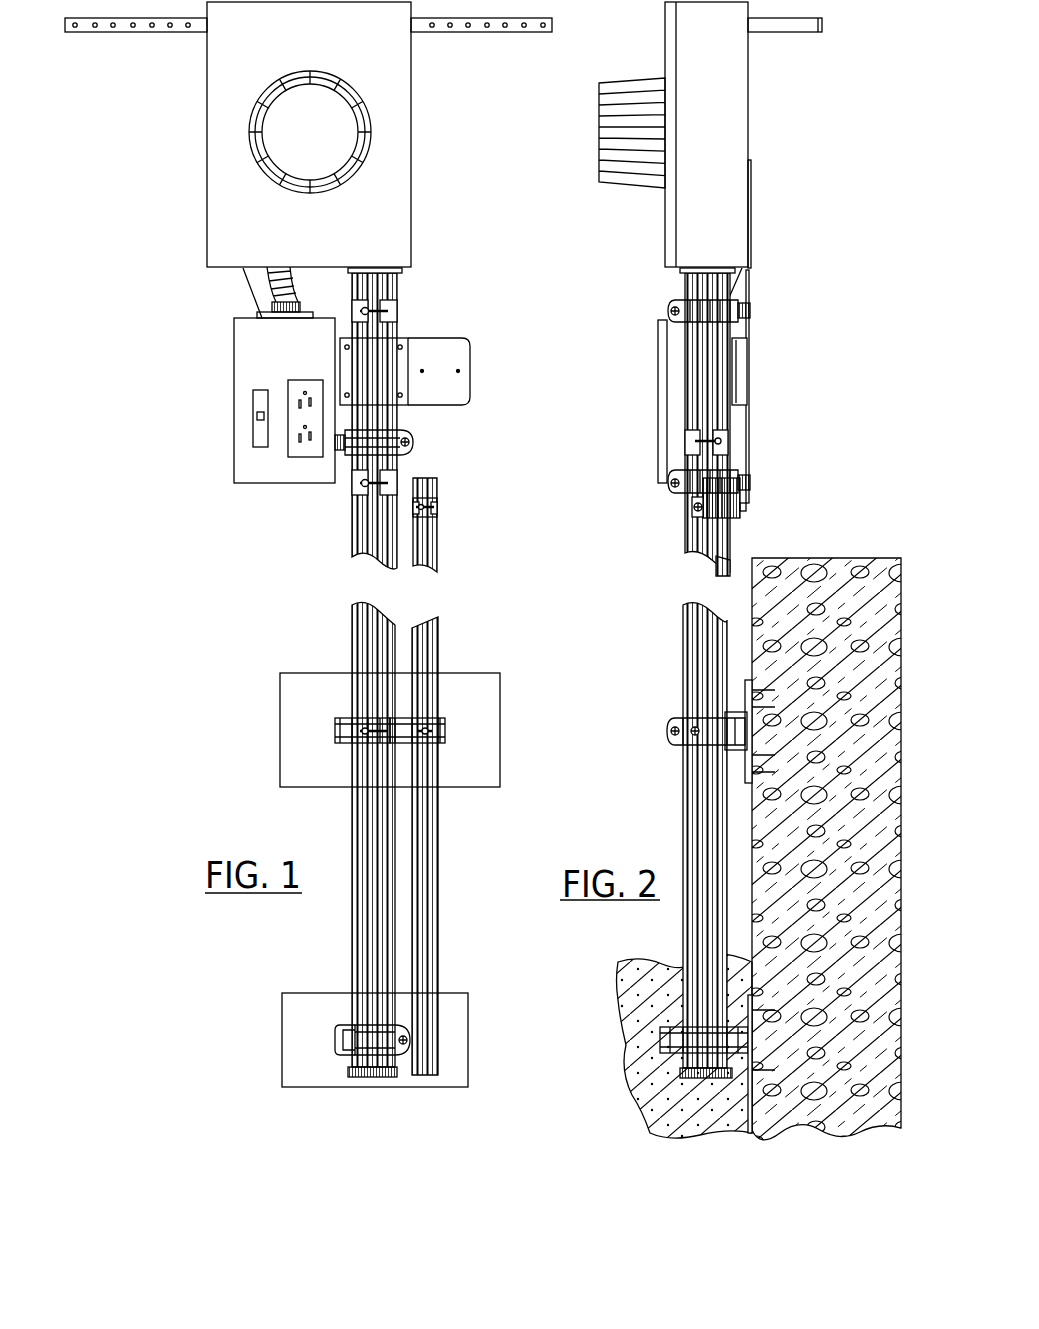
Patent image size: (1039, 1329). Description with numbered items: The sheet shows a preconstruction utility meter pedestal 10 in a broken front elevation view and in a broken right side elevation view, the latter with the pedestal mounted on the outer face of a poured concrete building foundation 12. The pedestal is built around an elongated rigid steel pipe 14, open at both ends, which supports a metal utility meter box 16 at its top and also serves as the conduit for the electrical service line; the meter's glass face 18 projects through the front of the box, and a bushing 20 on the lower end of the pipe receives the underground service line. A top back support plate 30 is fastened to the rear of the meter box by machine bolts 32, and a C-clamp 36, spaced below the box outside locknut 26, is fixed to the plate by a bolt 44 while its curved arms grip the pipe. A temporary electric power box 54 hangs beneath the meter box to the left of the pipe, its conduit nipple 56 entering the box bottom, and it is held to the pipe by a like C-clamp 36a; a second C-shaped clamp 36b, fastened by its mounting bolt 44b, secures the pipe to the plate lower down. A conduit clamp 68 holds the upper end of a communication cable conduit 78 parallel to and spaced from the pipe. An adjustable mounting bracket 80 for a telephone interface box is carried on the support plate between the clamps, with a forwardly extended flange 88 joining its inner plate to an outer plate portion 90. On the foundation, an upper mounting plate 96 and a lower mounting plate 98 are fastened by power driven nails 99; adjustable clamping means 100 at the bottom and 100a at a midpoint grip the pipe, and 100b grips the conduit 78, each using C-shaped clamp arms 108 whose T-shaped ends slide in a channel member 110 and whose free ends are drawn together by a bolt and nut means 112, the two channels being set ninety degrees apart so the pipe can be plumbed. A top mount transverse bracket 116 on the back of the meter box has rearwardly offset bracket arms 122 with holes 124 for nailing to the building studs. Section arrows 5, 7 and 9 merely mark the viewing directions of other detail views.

In FIG. 2, the section view direction arrow 5 is at (782, 147).
In FIG. 2, the section view direction arrows 7 is at (650, 700).
In FIG. 2, the section view direction arrows 9 is at (613, 968).
In FIG. 1, the preconstruction utility meter pedestal 10 is at (351, 627).
In FIG. 2, the preconstruction utility meter pedestal 10 is at (680, 643).
In FIG. 2, the building foundation 12 is at (823, 582).
In FIG. 1, the elongated rigid steel pipe 14 is at (373, 537).
In FIG. 2, the elongated rigid steel pipe 14 is at (685, 554).
In FIG. 1, the metal utility meter box 16 is at (228, 229).
In FIG. 2, the metal utility meter box 16 is at (693, 240).
In FIG. 1, the glass face 18 is at (295, 139).
In FIG. 2, the glass face 18 is at (648, 163).
In FIG. 1, the bushing 20 is at (358, 1076).
In FIG. 2, the bushing 20 is at (688, 1080).
In FIG. 1, the outside locknut 26 is at (375, 270).
In FIG. 2, the outside locknut 26 is at (679, 272).
In FIG. 1, the top back support plate 30 is at (258, 282).
In FIG. 2, the top back support plate 30 is at (751, 258).
In FIG. 2, the machine bolts 32 is at (751, 248).
In FIG. 1, the C-clamp 36 is at (666, 310).
In FIG. 1, the C-clamp 36a is at (686, 449).
In FIG. 1, the second C-shaped clamp 36b is at (355, 494).
In FIG. 2, the second C-shaped clamp 36b is at (679, 498).
In FIG. 2, the bolt 44 is at (751, 313).
In FIG. 2, the mounting bolt 44b is at (751, 483).
In FIG. 1, the temporary electric power box 54 is at (277, 475).
In FIG. 2, the temporary electric power box 54 is at (657, 352).
In FIG. 1, the conduit nipple 56 is at (261, 318).
In FIG. 1, the conduit clamp 68 is at (686, 516).
In FIG. 1, the communication cable conduit 78 is at (422, 568).
In FIG. 2, the communication cable conduit 78 is at (722, 544).
In FIG. 1, the adjustable mounting bracket 80 is at (471, 387).
In FIG. 2, the adjustable mounting bracket 80 is at (742, 353).
In FIG. 2, the forwardly extended flange 88 is at (743, 382).
In FIG. 1, the outer plate portion 90 is at (445, 348).
In FIG. 1, the upper mounting plate 96 is at (305, 700).
In FIG. 2, the upper mounting plate 96 is at (750, 678).
In FIG. 1, the lower mounting plate 98 is at (298, 1025).
In FIG. 2, the lower mounting plate 98 is at (752, 1070).
In FIG. 2, the power driven nails 99 is at (747, 768).
In FIG. 1, the adjustable clamping means 100 is at (334, 1049).
In FIG. 2, the adjustable clamping means 100 is at (668, 1020).
In FIG. 1, the adjustable clamping means 100a is at (343, 749).
In FIG. 1, the adjustable clamping means 100b is at (436, 749).
In FIG. 1, the C-shaped clamping arms 108 is at (380, 1058).
In FIG. 1, the clamp channel 110 is at (348, 1027).
In FIG. 1, the bolt and nut means 112 is at (404, 1051).
In FIG. 1, the top mount transverse bracket 116 is at (482, 33).
In FIG. 2, the top mount transverse bracket 116 is at (785, 34).
In FIG. 1, the bracket arms 122 is at (180, 32).
In FIG. 1, the holes 124 is at (131, 28).